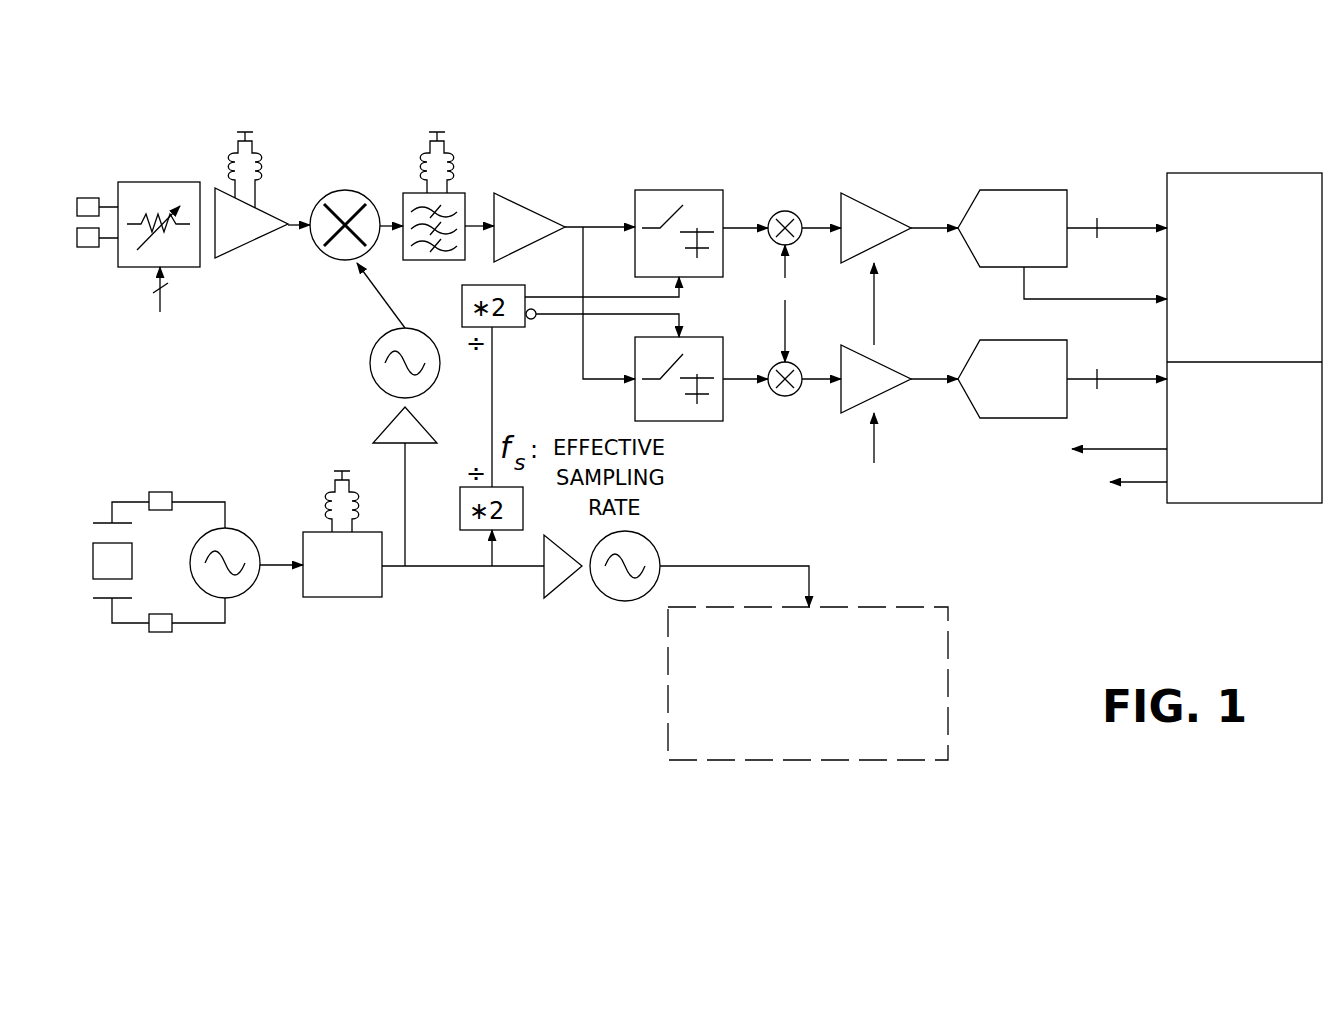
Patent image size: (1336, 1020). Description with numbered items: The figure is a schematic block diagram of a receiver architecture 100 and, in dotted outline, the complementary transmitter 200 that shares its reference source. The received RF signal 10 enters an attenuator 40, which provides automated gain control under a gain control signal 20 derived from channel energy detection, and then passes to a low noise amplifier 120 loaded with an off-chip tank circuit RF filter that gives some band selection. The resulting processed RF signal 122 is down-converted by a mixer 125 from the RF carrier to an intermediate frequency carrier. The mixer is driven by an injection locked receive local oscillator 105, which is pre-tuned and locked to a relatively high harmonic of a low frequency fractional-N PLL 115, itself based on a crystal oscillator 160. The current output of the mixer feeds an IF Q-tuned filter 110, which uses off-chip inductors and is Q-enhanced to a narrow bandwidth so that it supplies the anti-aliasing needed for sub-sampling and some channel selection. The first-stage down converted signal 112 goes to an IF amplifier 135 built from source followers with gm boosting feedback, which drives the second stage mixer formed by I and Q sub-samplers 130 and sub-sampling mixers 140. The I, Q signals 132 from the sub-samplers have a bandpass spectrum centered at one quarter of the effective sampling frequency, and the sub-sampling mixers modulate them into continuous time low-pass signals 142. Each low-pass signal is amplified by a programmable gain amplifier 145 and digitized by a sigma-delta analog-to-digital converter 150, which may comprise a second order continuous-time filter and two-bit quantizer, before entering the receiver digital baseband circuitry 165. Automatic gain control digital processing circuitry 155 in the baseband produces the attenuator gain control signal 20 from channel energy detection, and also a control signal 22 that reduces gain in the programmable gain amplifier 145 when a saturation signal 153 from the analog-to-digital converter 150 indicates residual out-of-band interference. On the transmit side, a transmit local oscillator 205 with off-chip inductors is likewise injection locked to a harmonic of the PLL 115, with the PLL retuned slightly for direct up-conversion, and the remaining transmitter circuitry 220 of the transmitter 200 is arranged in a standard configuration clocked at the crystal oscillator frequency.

The received RF signal 10 is at (72, 218).
The attenuator 40 is at (178, 182).
The gain control signal 20 is at (652, 359).
The low noise amplifier 120 is at (248, 258).
The processed RF signal 122 is at (298, 227).
The mixer 125 is at (360, 190).
The IF Q-tuned filter 110 is at (438, 260).
The first-stage down converted signal 112 is at (473, 222).
The IF amplifier 135 is at (528, 213).
The sub-sampler 130 is at (644, 210).
The I, Q signals 132 is at (742, 227).
The sub-sampling mixer 140 is at (785, 210).
The continuous time low-pass signal 142 is at (820, 227).
The programmable gain amplifier 145 is at (888, 213).
The control signal 22 is at (1011, 392).
The analog-to-digital converter 150 is at (1022, 190).
The saturation signal 153 is at (1090, 299).
The receiver digital baseband circuitry 165 is at (1278, 200).
The automatic gain control digital processing circuitry 155 is at (1210, 495).
The receiver architecture 100 is at (1112, 180).
The receive local oscillator 105 is at (381, 398).
The crystal oscillator 160 is at (190, 605).
The PLL 115 is at (325, 598).
The transmit local oscillator 205 is at (622, 602).
The transmitter 200 is at (572, 682).
The transmitter circuitry 220 is at (948, 682).